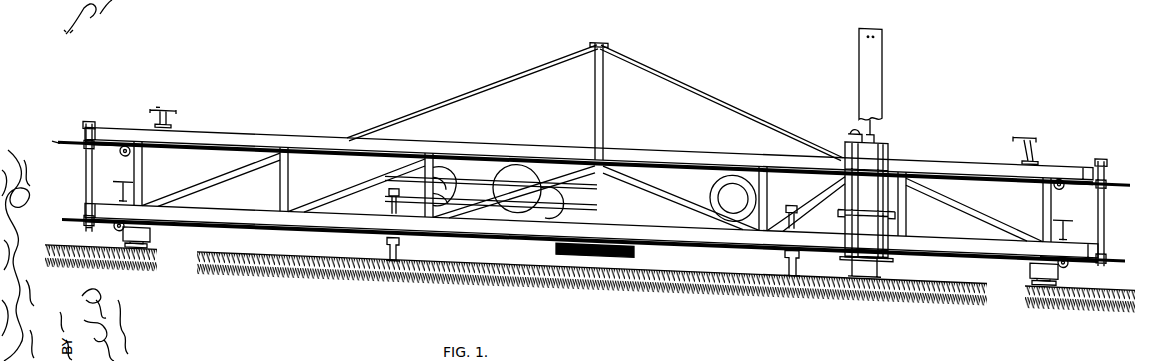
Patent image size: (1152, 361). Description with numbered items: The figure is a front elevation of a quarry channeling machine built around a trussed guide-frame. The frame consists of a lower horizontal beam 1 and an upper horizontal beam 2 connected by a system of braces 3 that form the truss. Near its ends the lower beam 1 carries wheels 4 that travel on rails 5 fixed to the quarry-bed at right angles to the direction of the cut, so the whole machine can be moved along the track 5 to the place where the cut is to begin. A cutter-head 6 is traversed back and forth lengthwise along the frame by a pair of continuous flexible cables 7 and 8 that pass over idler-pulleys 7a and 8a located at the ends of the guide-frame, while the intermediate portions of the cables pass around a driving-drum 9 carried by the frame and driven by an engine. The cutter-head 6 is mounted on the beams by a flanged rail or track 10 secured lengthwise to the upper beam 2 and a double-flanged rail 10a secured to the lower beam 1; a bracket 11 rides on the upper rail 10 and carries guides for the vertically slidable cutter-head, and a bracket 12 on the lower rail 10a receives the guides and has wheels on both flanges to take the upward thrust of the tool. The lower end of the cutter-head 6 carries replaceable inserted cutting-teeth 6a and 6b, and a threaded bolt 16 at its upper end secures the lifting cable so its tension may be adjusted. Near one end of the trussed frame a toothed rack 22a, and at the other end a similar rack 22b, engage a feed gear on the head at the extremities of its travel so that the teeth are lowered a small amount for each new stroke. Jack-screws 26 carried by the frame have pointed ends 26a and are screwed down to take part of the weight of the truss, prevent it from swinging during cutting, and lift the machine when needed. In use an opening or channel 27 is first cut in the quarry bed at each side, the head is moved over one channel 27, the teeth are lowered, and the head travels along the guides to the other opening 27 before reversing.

The lower horizontal beam 1 is at (246, 222).
The upper horizontal beam 2 is at (217, 132).
The braces 3 is at (672, 193).
The wheels 4 is at (123, 240).
The rails 5 is at (150, 240).
The cutter-head 6 is at (866, 189).
The cutting-teeth 6a is at (872, 266).
The cutting-teeth 6b is at (852, 281).
The flexible cable 7 is at (952, 170).
The idler-pulley 7a is at (62, 143).
The flexible cable 8 is at (930, 249).
The idler-pulley 8a is at (65, 218).
The driving-drum 9 is at (462, 240).
The flanged rail 10 is at (235, 143).
The double-flanged rail 10a is at (200, 214).
The bracket 11 is at (892, 162).
The bracket 12 is at (886, 236).
The threaded bolt 16 is at (884, 80).
The toothed rack 22a is at (155, 109).
The rack 22b is at (1025, 140).
The jack-screws 26 is at (403, 262).
The pointed ends 26a is at (390, 260).
The opening or channel 27 is at (590, 284).